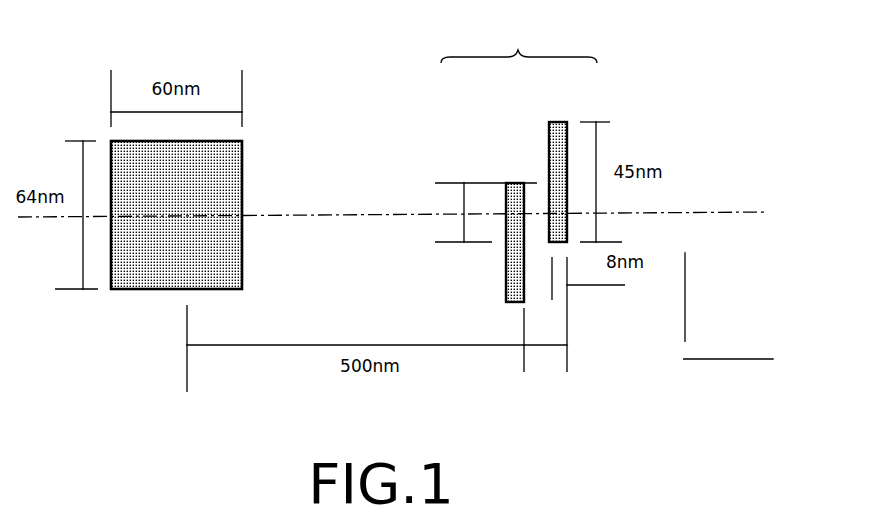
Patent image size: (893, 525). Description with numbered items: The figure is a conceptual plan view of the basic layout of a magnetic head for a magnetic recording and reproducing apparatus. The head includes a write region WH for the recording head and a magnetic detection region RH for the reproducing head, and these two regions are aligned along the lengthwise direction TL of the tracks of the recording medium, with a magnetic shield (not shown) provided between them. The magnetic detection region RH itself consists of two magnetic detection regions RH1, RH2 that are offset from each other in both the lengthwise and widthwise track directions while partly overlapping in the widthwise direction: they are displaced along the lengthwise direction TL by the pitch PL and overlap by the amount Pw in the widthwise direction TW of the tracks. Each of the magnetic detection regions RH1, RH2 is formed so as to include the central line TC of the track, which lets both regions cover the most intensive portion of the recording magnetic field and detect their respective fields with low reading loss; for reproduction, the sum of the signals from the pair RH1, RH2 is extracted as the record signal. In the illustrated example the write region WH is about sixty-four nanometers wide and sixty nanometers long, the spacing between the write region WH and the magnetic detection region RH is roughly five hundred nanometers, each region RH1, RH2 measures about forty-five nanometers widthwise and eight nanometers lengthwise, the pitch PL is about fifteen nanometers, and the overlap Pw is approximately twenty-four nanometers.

The write region WH is at (157, 274).
The magnetic detection region RH is at (519, 159).
The first magnetic detection region RH1 is at (513, 183).
The second magnetic detection region RH2 is at (558, 122).
The central line of the track TC is at (393, 199).
The widthwise direction of the tracks TW is at (706, 288).
The lengthwise direction of the tracks TL is at (733, 335).
The pitch PL is at (558, 329).
The overlap in the widthwise direction Pw is at (459, 199).